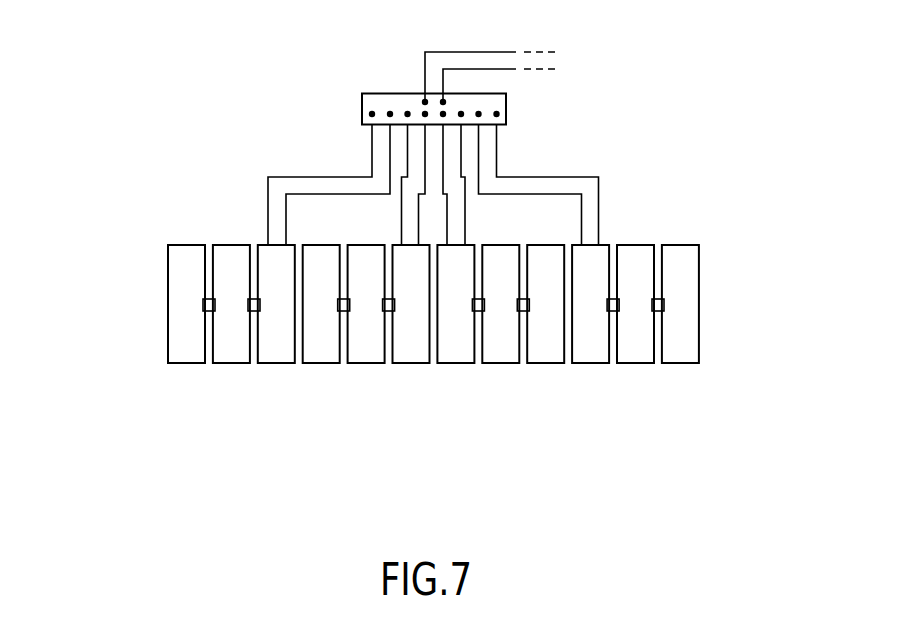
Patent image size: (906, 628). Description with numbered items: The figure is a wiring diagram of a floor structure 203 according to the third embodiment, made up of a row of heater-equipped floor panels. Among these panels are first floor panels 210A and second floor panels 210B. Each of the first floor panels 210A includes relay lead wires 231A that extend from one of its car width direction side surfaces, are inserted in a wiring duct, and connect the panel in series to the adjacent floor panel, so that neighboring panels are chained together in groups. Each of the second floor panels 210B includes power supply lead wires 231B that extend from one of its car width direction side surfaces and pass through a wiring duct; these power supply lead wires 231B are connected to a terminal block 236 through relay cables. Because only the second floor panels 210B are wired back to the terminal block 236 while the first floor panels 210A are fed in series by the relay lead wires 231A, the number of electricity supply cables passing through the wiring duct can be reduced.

The floor structure 203 is at (708, 124).
The terminal block 236 is at (362, 112).
The power supply lead wires 231B is at (286, 203).
The relay lead wires 231A is at (255, 293).
The first floor panels 210A is at (232, 350).
The second floor panels 210B is at (275, 350).